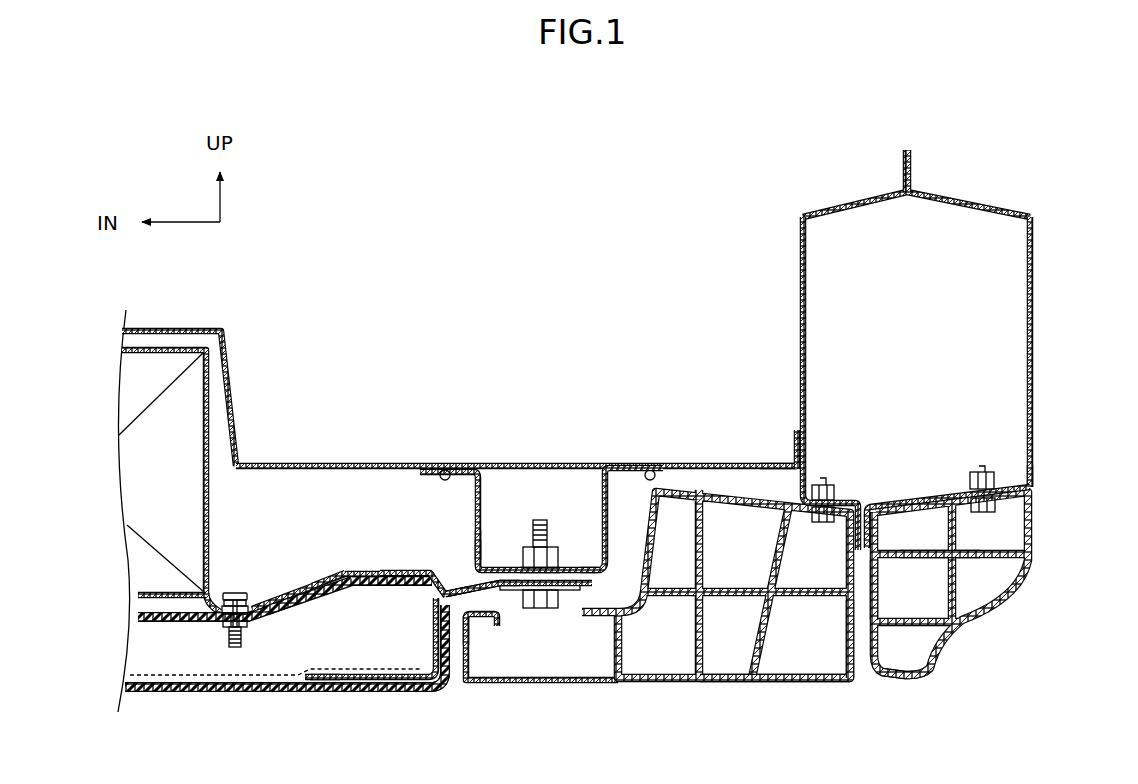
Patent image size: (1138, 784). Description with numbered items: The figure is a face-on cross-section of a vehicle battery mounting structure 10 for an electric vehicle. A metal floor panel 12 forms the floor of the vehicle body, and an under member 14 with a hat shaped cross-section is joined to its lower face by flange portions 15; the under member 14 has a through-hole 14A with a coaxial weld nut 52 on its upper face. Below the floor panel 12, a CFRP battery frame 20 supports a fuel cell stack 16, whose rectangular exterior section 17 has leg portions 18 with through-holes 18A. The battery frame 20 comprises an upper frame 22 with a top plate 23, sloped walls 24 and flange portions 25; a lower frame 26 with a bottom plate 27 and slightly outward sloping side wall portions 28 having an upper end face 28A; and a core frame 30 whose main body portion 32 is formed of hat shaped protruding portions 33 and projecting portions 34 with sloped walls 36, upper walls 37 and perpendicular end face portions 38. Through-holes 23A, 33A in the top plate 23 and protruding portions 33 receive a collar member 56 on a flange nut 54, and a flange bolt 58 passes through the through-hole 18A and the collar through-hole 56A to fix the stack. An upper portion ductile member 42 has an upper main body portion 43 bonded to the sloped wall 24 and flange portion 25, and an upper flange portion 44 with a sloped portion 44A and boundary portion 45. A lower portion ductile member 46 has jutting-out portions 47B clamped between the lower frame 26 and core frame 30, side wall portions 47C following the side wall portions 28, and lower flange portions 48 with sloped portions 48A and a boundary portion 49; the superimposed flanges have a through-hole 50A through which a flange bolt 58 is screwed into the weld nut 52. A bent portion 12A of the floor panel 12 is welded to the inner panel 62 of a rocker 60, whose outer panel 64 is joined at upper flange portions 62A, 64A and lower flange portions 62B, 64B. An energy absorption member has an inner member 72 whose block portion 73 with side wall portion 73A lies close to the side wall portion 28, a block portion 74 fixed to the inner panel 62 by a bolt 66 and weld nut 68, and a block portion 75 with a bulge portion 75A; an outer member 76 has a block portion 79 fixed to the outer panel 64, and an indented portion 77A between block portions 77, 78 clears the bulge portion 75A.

The vehicle battery mounting structure 10 is at (230, 694).
The floor panel 12 is at (307, 461).
The bent portion 12A is at (796, 460).
The under member 14 is at (611, 535).
The through-hole 14A is at (535, 562).
The flange portion 15 is at (446, 470).
The fuel cell stack 16 is at (214, 407).
The exterior section 17 is at (210, 362).
The leg portion 18 is at (250, 620).
The through-hole 18A is at (235, 592).
The battery frame 20 is at (192, 694).
The upper frame 22 is at (352, 578).
The top plate 23 is at (150, 597).
The through-hole 23A is at (246, 614).
The sloped wall 24 is at (334, 578).
The flange portion 25 is at (378, 572).
The lower frame 26 is at (262, 694).
The bottom plate 27 is at (158, 692).
The side wall portion 28 is at (448, 652).
The upper end face 28A is at (437, 613).
The core frame 30 is at (163, 648).
The main body portion 32 is at (142, 686).
The protruding portion 33 is at (140, 617).
The through-hole 33A is at (205, 637).
The projecting portion 34 is at (326, 679).
The sloped wall 36 is at (277, 620).
The upper wall 37 is at (385, 595).
The end face portion 38 is at (438, 692).
The upper portion ductile member 42 is at (431, 561).
The upper main body portion 43 is at (362, 572).
The upper flange portion 44 is at (606, 467).
The sloped portion 44A is at (478, 553).
The boundary portion 45 is at (447, 590).
The lower portion ductile member 46 is at (457, 606).
The jutting-out portion 47B is at (318, 682).
The side wall portion 47C is at (432, 638).
The lower flange portion 48 is at (582, 586).
The sloped portion 48A is at (482, 600).
The boundary portion 49 is at (438, 598).
The through-hole 50A is at (552, 580).
The weld nut 52 is at (540, 530).
The flange nut 54 is at (235, 635).
The collar member 56 is at (245, 625).
The through-hole 56A is at (238, 600).
The flange bolt 58 is at (240, 608).
The rocker 60 is at (966, 206).
The inner panel 62 is at (801, 250).
The upper flange portion 62A is at (900, 172).
The lower flange portion 62B is at (858, 508).
The outer panel 64 is at (1033, 300).
The upper flange portion 64A is at (913, 172).
The lower flange portion 64B is at (872, 502).
The bolt 66 is at (824, 524).
The weld nut 68 is at (826, 484).
The inner member 72 is at (766, 686).
The block portion 73 is at (525, 685).
The side wall portion 73A is at (478, 632).
The block portion 74 is at (795, 465).
The block portion 75 is at (815, 682).
The bulge portion 75A is at (850, 634).
The outer member 76 is at (988, 613).
The block portion 77 is at (932, 520).
The indented portion 77A is at (900, 615).
The block portion 78 is at (920, 672).
The block portion 79 is at (1027, 488).